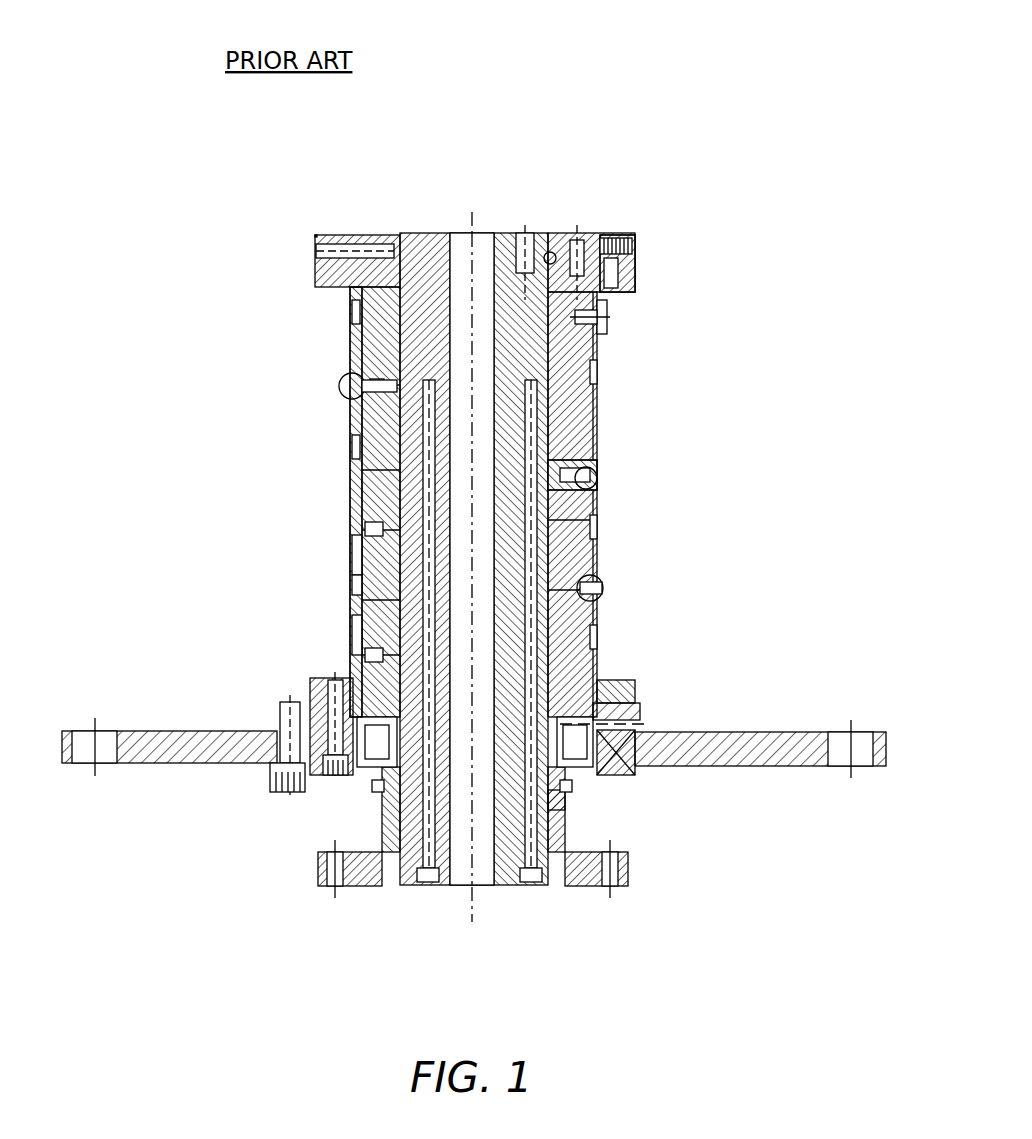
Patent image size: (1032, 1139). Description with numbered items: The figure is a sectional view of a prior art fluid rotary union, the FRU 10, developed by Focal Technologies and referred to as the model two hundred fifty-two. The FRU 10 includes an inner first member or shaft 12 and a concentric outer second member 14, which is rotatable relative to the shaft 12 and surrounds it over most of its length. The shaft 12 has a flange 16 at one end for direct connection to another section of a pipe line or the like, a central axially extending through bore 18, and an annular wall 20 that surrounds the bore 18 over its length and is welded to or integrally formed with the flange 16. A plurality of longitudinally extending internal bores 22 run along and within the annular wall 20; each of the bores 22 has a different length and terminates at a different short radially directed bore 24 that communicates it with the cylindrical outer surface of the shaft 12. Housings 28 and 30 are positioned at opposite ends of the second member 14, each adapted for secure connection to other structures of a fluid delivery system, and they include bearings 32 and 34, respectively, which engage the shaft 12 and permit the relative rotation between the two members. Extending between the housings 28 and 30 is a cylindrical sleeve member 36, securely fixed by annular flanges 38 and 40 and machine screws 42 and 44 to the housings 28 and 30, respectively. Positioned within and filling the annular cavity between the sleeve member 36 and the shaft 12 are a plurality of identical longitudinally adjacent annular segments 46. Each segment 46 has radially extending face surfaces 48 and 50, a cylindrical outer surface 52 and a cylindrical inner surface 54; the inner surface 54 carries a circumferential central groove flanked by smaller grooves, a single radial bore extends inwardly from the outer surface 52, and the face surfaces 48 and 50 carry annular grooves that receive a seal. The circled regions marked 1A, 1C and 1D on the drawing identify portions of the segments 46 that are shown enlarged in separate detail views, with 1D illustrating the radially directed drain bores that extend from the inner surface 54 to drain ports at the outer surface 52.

The FRU 10 is at (838, 88).
The shaft 12 is at (400, 888).
The second member 14 is at (340, 470).
The flange 16 is at (573, 888).
The through bore 18 is at (482, 899).
The annular wall 20 is at (565, 812).
The internal bores 22 is at (425, 899).
The radially directed bore 24 is at (414, 380).
The housing 28 is at (797, 722).
The housing 30 is at (642, 252).
The bearing 32 is at (600, 775).
The bearing 34 is at (554, 245).
The sleeve member 36 is at (600, 428).
The annular flange 38 is at (630, 680).
The annular flange 40 is at (622, 290).
The machine screws 42 is at (305, 797).
The machine screws 44 is at (617, 234).
The annular segments 46 is at (350, 312).
The face surface 48 is at (370, 640).
The face surface 50 is at (367, 553).
The cylindrical outer surface 52 is at (347, 568).
The cylindrical inner surface 54 is at (365, 625).
The detail view 1A is at (345, 385).
The detail view 1C is at (612, 588).
The detail view 1D is at (600, 480).